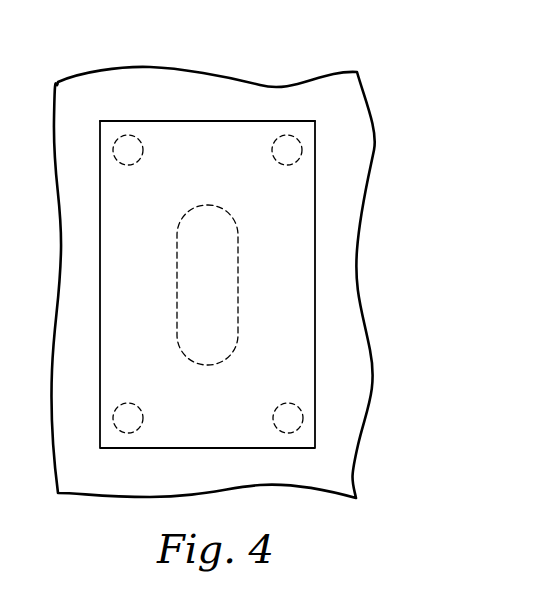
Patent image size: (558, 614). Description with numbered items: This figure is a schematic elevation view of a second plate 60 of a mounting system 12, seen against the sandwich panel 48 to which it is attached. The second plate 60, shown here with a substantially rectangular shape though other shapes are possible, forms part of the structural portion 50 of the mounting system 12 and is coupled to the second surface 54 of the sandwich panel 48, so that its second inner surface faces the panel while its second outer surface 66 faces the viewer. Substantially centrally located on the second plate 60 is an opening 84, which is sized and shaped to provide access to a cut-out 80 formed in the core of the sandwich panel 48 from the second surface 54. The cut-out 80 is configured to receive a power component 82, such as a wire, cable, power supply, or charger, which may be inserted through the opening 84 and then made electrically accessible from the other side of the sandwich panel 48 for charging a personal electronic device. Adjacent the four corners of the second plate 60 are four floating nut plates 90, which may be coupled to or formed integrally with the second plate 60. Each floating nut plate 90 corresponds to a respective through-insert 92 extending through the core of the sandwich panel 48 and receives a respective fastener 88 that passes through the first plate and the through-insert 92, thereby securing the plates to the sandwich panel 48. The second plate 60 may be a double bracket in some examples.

The mounting system 12 is at (391, 78).
The sandwich panel 48 is at (368, 440).
The structural portion 50 is at (86, 281).
The second surface 54 is at (160, 482).
The second plate 60 is at (209, 140).
The second outer surface 66 is at (151, 244).
The cut-out 80 is at (222, 249).
The power component 82 is at (222, 310).
The opening 84 is at (237, 272).
The fastener 88 is at (323, 97).
The through-insert 92 is at (292, 140).
The floating nut plate 90 is at (122, 137).